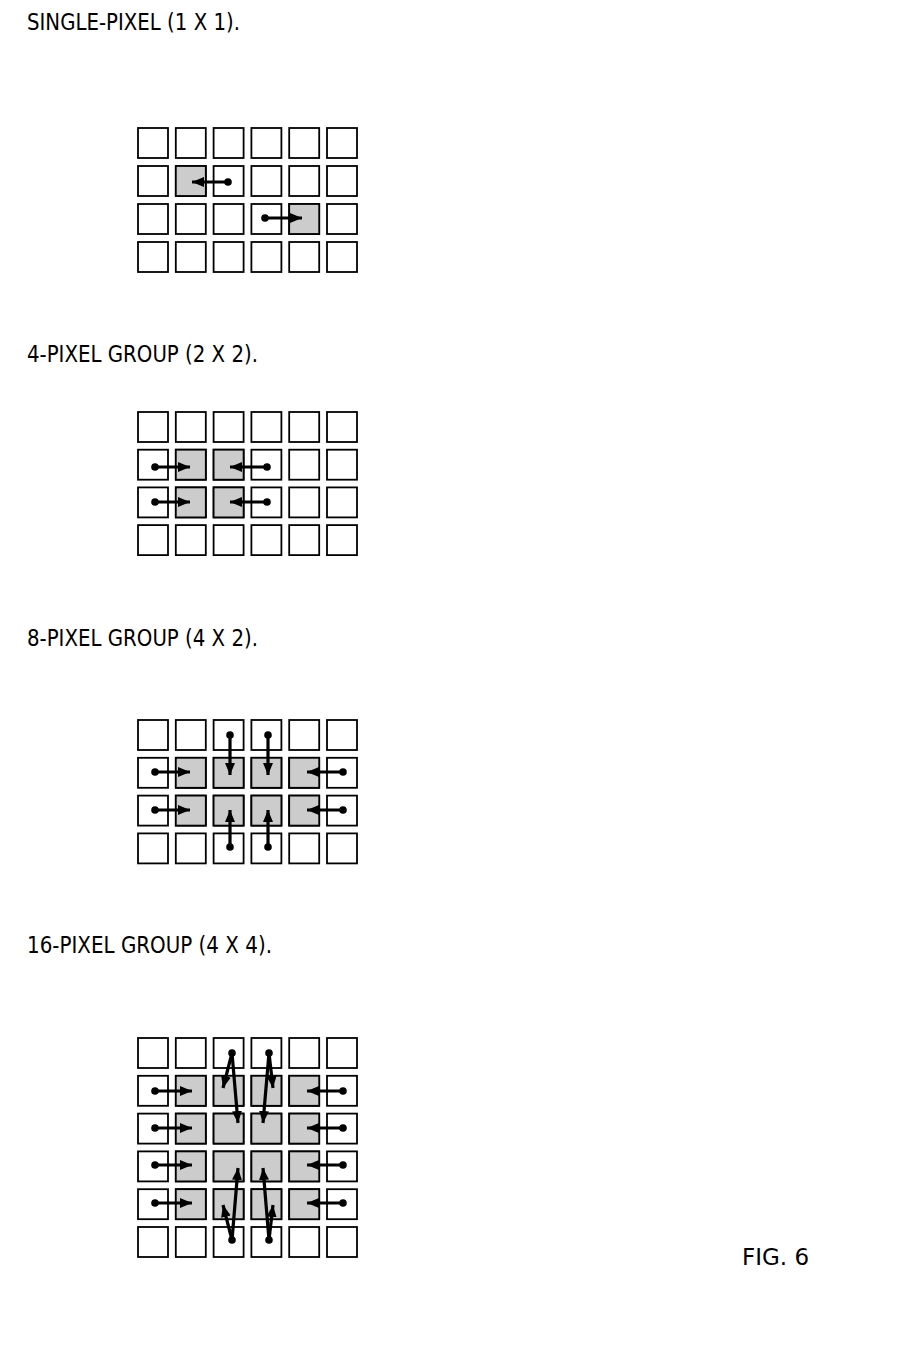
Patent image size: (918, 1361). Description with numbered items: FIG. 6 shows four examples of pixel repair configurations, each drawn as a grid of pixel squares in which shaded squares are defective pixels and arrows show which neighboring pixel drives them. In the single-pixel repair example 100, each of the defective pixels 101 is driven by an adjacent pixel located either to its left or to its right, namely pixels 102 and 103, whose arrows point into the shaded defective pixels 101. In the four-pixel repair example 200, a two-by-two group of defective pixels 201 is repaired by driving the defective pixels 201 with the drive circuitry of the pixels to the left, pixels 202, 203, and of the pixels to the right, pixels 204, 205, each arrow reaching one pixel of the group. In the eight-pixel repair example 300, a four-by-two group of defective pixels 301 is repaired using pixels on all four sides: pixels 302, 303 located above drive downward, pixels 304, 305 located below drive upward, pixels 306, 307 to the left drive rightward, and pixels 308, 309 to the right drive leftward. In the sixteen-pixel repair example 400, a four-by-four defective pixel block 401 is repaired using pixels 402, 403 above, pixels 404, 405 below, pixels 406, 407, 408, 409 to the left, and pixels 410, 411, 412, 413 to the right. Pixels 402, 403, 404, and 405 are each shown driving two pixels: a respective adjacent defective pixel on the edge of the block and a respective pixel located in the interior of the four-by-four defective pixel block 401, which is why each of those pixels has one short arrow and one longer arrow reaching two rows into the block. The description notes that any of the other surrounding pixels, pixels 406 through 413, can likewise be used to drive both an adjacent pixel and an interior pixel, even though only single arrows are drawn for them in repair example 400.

The repair example 100 is at (408, 194).
The defective pixels 101 is at (185, 177).
The pixel 102 is at (228, 182).
The pixel 103 is at (265, 218).
The repair example 200 is at (408, 488).
The defective pixels 201 is at (213, 475).
The pixel 202 is at (138, 456).
The pixel 203 is at (138, 501).
The pixel 204 is at (273, 456).
The pixel 205 is at (273, 500).
The repair example 300 is at (447, 780).
The defective pixels 301 is at (263, 793).
The pixel 302 is at (230, 720).
The pixel 303 is at (275, 720).
The pixel 304 is at (230, 863).
The pixel 305 is at (260, 863).
The pixel 306 is at (138, 765).
The pixel 307 is at (138, 805).
The pixel 308 is at (350, 767).
The pixel 309 is at (350, 797).
The repair example 400 is at (487, 1118).
The defective pixel block 401 is at (247, 1150).
The pixel 402 is at (231, 1038).
The pixel 403 is at (276, 1038).
The pixel 404 is at (231, 1257).
The pixel 405 is at (277, 1257).
The pixel 406 is at (138, 1083).
The pixel 407 is at (138, 1122).
The pixel 408 is at (138, 1163).
The pixel 409 is at (138, 1210).
The pixel 410 is at (343, 1093).
The pixel 411 is at (353, 1121).
The pixel 412 is at (343, 1167).
The pixel 413 is at (353, 1210).